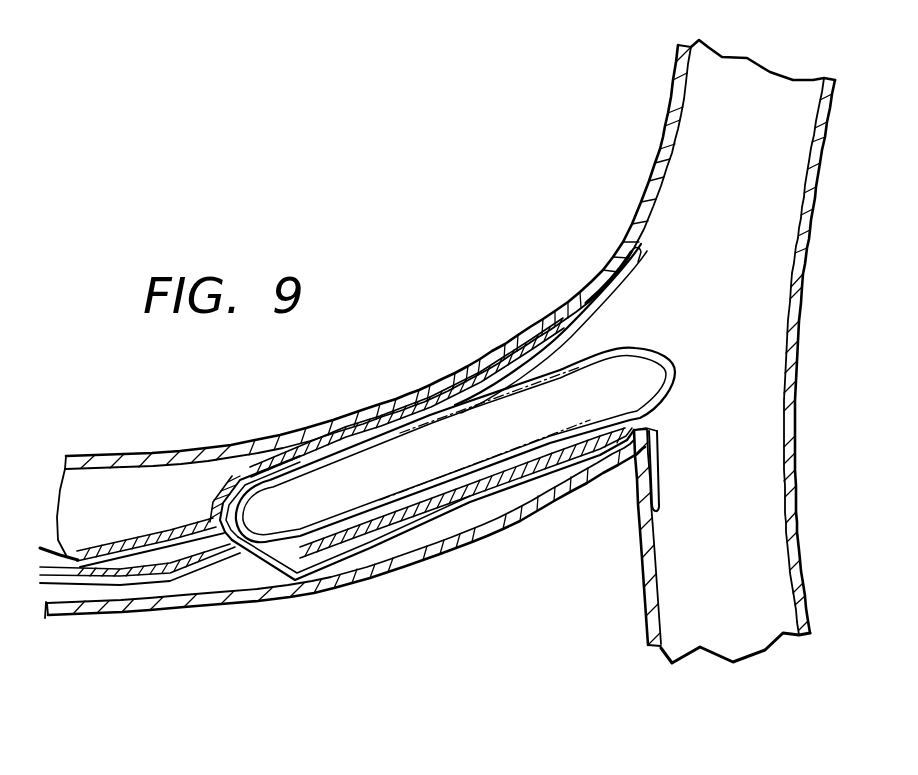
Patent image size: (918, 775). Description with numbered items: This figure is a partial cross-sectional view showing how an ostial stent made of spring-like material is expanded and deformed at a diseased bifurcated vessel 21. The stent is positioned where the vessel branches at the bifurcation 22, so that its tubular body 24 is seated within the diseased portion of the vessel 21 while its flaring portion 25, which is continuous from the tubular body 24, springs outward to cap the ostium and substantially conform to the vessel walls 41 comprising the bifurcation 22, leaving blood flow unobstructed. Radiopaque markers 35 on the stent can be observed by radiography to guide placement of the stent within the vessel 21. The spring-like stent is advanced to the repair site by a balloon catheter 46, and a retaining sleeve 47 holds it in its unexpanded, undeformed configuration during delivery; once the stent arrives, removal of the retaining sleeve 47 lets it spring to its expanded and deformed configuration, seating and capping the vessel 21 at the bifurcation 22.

The bifurcated vessel 21 is at (666, 78).
The bifurcation 22 is at (620, 484).
The tubular body 24 is at (352, 423).
The flaring portion 25 is at (624, 262).
The radiopaque markers 35 is at (540, 333).
The vessel walls 41 is at (666, 175).
The balloon catheter 46 is at (227, 513).
The retaining sleeve 47 is at (281, 464).